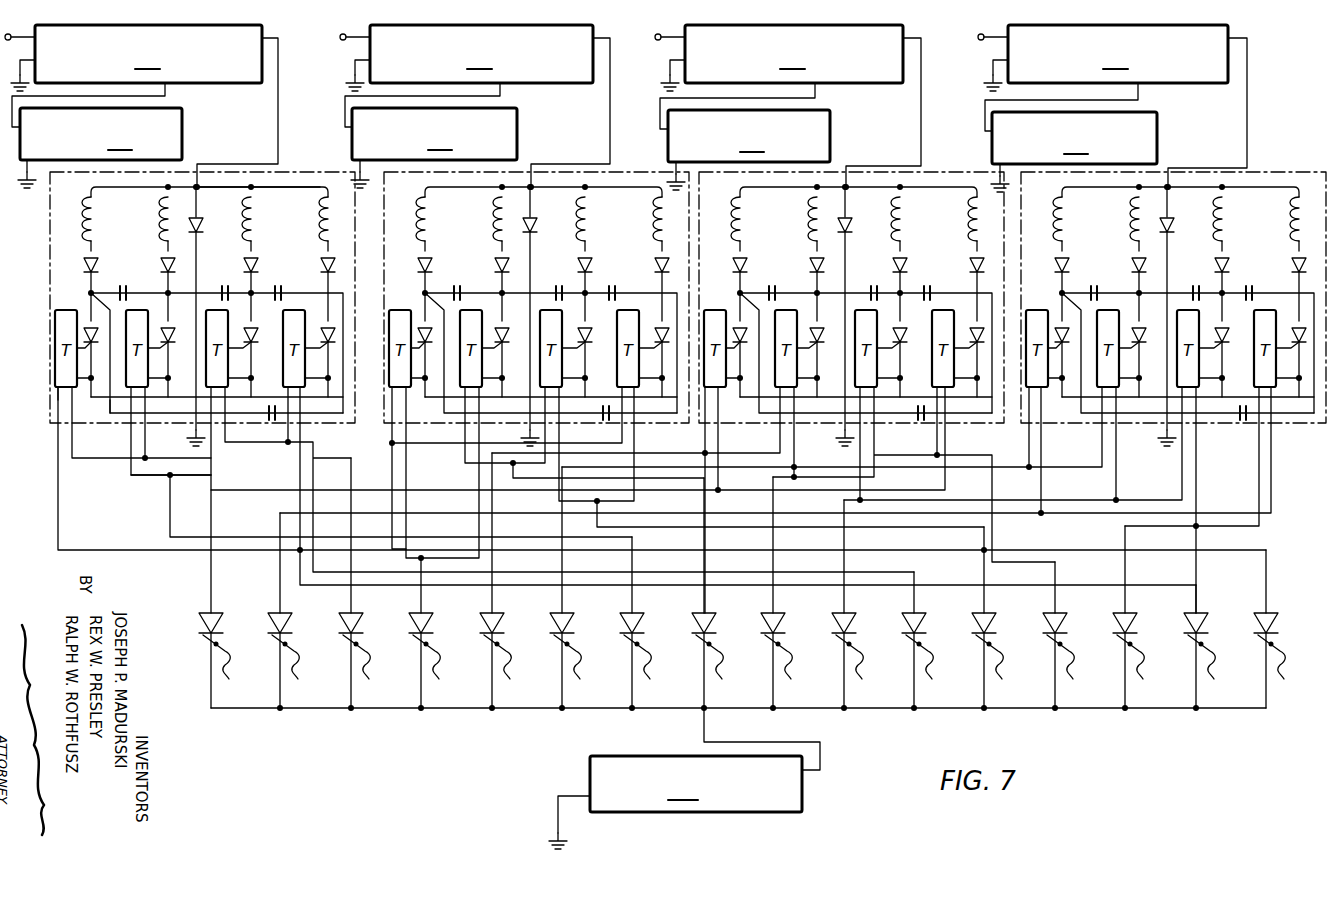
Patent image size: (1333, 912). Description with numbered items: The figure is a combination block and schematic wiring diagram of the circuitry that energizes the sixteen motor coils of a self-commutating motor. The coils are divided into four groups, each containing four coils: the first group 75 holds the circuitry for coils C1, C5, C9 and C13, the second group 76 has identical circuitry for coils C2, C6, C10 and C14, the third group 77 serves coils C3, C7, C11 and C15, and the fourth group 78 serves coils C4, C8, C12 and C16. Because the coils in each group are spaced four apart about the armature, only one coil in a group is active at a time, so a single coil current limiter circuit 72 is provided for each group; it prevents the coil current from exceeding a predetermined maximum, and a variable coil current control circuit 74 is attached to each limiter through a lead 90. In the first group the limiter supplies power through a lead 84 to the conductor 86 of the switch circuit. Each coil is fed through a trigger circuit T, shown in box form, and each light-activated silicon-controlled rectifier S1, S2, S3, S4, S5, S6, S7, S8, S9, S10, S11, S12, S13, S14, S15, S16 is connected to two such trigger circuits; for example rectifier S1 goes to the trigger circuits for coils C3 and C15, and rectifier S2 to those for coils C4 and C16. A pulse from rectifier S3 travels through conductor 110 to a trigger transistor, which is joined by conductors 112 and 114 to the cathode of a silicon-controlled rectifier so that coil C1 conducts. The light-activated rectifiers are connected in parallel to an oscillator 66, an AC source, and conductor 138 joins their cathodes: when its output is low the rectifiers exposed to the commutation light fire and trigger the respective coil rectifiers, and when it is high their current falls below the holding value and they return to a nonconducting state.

The coil current limiter circuit 72 is at (616, 58).
The variable coil current control circuit 74 is at (587, 150).
The first group 75 is at (50, 380).
The second group 76 is at (381, 420).
The third group 77 is at (700, 430).
The fourth group 78 is at (1020, 432).
The lead 84 is at (278, 108).
The conductor 86 is at (230, 187).
The lead 90 is at (55, 96).
The conductor 110 is at (226, 468).
The conductor 112 is at (94, 404).
The conductor 114 is at (58, 395).
The conductor 138 is at (760, 737).
The oscillator 66 is at (675, 802).
The coil C1 is at (90, 224).
The coil C2 is at (424, 228).
The coil C3 is at (739, 244).
The coil C4 is at (1060, 244).
The coil C5 is at (162, 218).
The coil C6 is at (500, 230).
The coil C7 is at (816, 244).
The coil C8 is at (1138, 246).
The coil C9 is at (245, 228).
The coil C10 is at (583, 238).
The coil C11 is at (898, 244).
The coil C12 is at (1219, 244).
The coil C13 is at (320, 227).
The coil C14 is at (657, 236).
The coil C15 is at (976, 244).
The coil C16 is at (1298, 244).
The light-activated silicon-controlled rectifier S1 is at (219, 623).
The light-activated silicon-controlled rectifier S2 is at (288, 623).
The light-activated silicon-controlled rectifier S3 is at (359, 623).
The light-activated silicon-controlled rectifier S4 is at (429, 623).
The light-activated silicon-controlled rectifier S5 is at (500, 623).
The light-activated silicon-controlled rectifier S6 is at (570, 623).
The light-activated silicon-controlled rectifier S7 is at (640, 623).
The light-activated silicon-controlled rectifier S8 is at (712, 623).
The light-activated silicon-controlled rectifier S9 is at (781, 623).
The light-activated silicon-controlled rectifier S10 is at (852, 623).
The light-activated silicon-controlled rectifier S11 is at (922, 623).
The light-activated silicon-controlled rectifier S12 is at (992, 623).
The light-activated silicon-controlled rectifier S13 is at (1063, 623).
The light-activated silicon-controlled rectifier S14 is at (1133, 623).
The light-activated silicon-controlled rectifier S15 is at (1204, 623).
The light-activated silicon-controlled rectifier S16 is at (1274, 623).